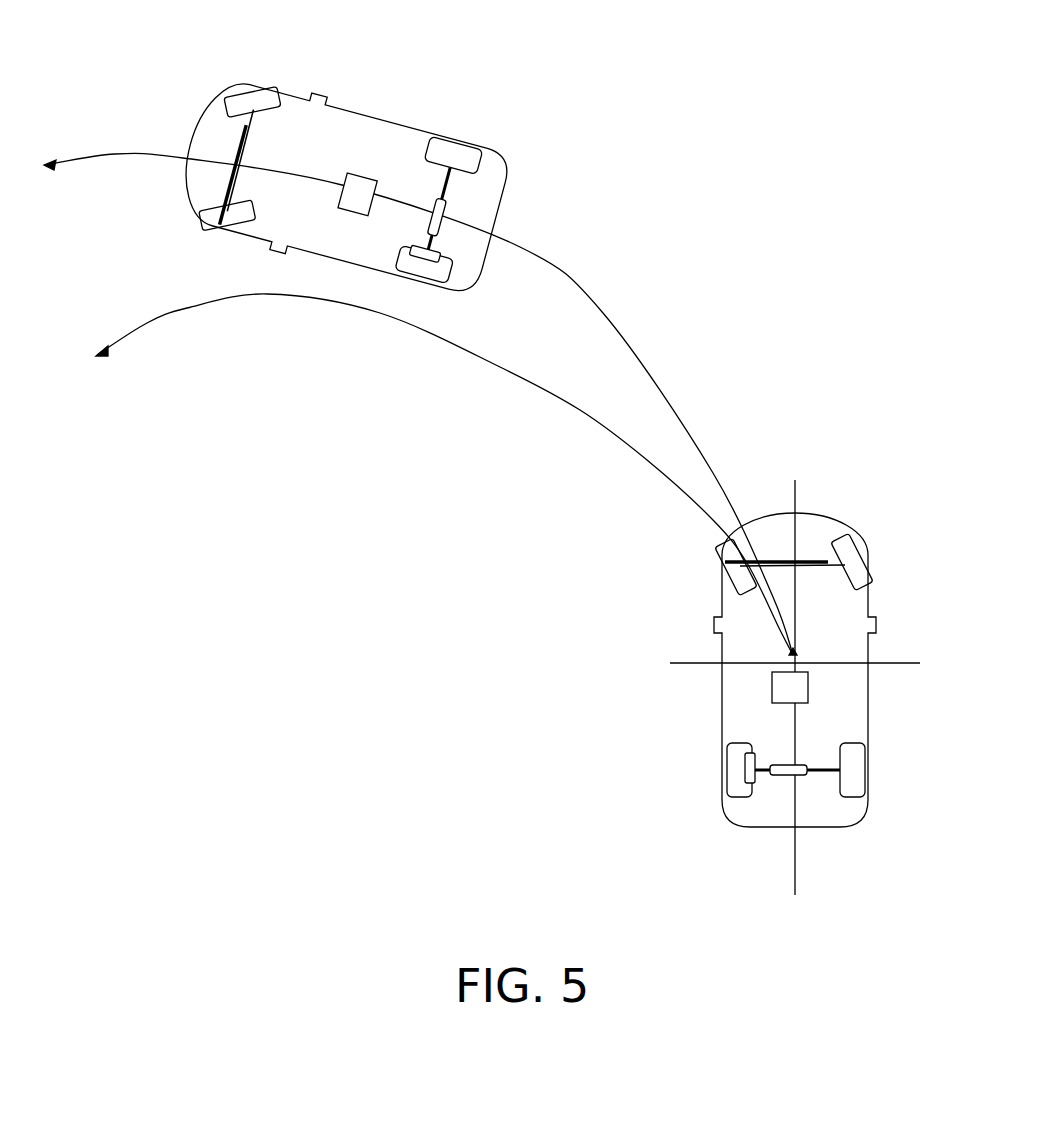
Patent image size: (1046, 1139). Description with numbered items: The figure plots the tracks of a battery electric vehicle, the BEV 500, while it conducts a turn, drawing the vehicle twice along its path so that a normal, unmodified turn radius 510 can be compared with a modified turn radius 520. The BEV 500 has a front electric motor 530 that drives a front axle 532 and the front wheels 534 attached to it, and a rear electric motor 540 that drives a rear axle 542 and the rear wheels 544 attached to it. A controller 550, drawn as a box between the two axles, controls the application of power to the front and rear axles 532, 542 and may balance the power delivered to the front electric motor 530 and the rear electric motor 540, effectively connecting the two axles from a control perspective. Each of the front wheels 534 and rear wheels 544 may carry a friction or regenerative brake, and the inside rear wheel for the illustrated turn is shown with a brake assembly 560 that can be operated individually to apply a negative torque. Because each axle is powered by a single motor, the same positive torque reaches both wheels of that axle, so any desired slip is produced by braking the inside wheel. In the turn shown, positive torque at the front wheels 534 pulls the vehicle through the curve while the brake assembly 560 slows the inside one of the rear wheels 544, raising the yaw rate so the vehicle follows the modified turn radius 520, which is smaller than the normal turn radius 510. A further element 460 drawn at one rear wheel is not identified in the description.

The BEV 500 is at (876, 597).
The normal turn radius 510 is at (610, 318).
The modified turn radius 520 is at (187, 309).
The front electric motor 530 is at (797, 561).
The front axle 532 is at (823, 563).
The front wheels 534 is at (848, 547).
The rear electric motor 540 is at (780, 778).
The rear axle 542 is at (813, 772).
The rear wheels 544 is at (727, 775).
The controller 550 is at (774, 690).
The brake assembly 560 is at (752, 782).
The wheel 460 is at (440, 260).